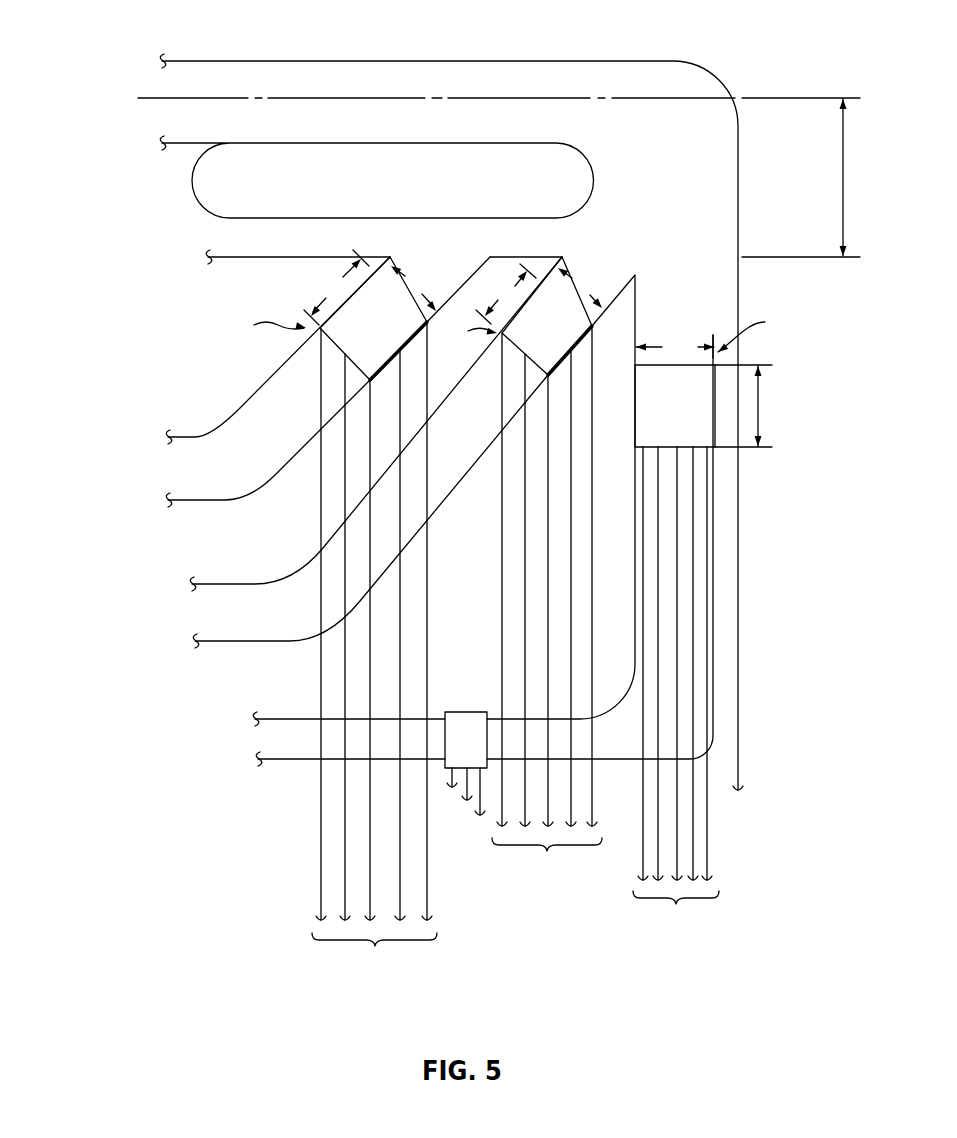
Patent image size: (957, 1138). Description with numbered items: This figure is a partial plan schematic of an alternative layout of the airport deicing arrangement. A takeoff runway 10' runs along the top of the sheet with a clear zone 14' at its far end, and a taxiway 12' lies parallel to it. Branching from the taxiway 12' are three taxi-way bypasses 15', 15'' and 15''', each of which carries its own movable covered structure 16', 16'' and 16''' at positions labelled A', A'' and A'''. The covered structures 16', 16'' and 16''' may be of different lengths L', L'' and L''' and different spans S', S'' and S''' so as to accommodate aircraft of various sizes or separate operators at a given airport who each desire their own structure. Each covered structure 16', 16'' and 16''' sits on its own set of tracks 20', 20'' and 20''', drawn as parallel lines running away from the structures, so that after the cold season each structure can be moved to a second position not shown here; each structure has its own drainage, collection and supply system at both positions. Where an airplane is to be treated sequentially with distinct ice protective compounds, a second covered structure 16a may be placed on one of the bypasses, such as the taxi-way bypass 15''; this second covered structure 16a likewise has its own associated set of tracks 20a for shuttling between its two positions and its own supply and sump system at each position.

The takeoff runway 10' is at (499, 399).
The taxiway 12' is at (376, 200).
The clear zone 14' is at (759, 178).
The taxi-way bypass 15' is at (272, 382).
The taxi-way bypass 15'' is at (312, 452).
The taxi-way bypass 15''' is at (425, 520).
The covered structure 16' is at (335, 315).
The covered structure 16'' is at (526, 316).
The covered structure 16''' is at (713, 380).
The second covered structure 16a is at (481, 748).
The set of tracks 20' is at (374, 646).
The set of tracks 20'' is at (547, 600).
The set of tracks 20''' is at (676, 687).
The set of tracks 20a is at (482, 814).